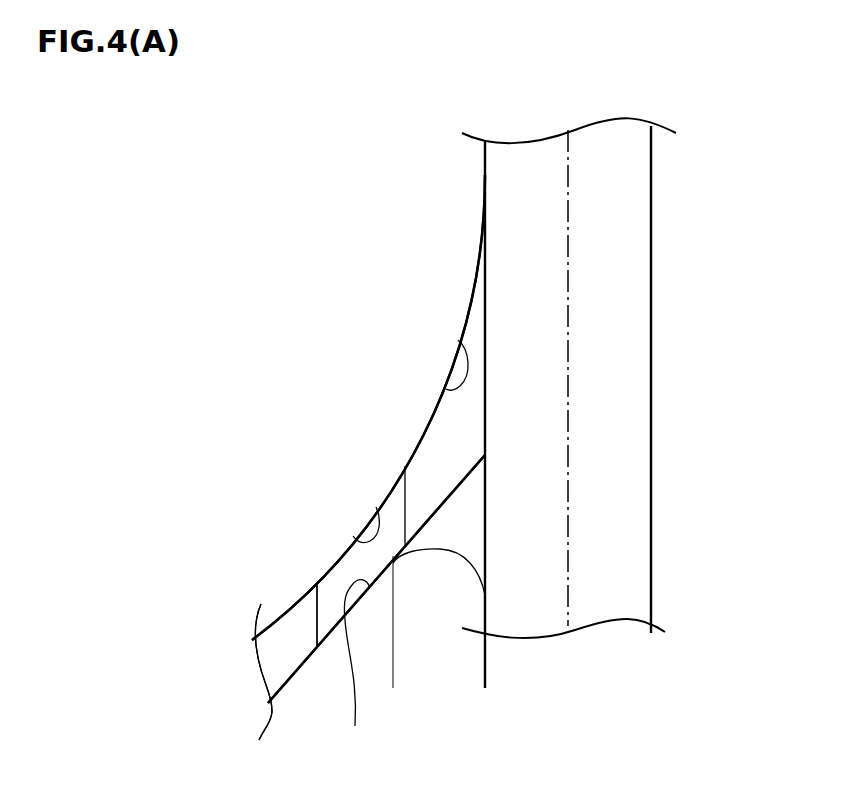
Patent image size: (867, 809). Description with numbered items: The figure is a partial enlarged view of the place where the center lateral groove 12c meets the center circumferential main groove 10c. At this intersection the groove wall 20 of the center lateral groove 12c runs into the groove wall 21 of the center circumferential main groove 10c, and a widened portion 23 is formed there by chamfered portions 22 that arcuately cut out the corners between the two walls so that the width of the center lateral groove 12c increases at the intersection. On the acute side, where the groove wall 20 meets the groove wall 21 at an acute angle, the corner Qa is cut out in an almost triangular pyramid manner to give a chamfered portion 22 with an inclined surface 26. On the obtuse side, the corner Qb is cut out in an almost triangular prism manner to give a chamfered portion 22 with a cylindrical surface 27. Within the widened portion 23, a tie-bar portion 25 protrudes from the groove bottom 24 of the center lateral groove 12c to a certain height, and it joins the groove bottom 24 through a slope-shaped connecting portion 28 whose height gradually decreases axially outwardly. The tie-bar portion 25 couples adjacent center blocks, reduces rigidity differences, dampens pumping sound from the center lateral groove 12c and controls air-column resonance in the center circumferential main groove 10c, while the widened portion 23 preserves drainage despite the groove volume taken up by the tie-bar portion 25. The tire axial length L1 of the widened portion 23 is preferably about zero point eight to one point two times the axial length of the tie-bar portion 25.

The center circumferential main groove 10c is at (612, 153).
The groove wall 21 is at (487, 172).
The widened portion 23 is at (505, 277).
The corner on obtuse side Qb is at (473, 328).
The corner on acute side Qa is at (503, 503).
The cylindrical surface 27 is at (456, 338).
The inclined surface 26 is at (463, 518).
The chamfered portion 22 is at (368, 439).
The tie-bar portion 25 is at (434, 473).
The groove wall 20 is at (376, 507).
The connecting portion 28 is at (343, 584).
The center lateral groove 12c is at (288, 638).
The groove bottom 24 is at (263, 672).
The tire axial length of widened portion L1 is at (485, 676).